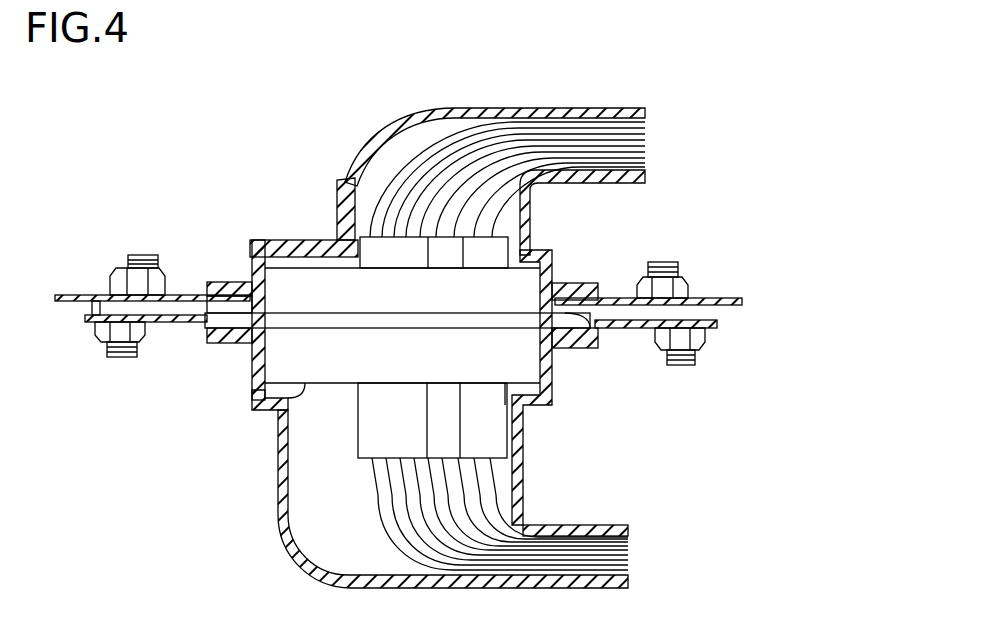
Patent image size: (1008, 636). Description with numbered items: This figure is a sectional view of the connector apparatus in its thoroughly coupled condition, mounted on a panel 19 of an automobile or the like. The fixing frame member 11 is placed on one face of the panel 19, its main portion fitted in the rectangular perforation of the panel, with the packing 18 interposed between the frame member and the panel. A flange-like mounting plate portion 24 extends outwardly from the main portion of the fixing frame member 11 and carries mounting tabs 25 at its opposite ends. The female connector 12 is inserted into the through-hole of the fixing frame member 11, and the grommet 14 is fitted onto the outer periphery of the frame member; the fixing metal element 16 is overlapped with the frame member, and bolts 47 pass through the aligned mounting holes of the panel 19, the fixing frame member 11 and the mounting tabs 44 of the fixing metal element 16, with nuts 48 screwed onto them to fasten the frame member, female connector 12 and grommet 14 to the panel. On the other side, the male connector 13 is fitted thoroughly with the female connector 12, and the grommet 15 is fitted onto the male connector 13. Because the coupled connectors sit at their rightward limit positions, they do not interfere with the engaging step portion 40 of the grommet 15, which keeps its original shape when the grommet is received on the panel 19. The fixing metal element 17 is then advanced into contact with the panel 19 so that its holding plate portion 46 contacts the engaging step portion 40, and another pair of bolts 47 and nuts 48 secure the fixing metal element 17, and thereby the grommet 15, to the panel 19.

The fixing frame member 11 is at (256, 396).
The female connector 12 is at (490, 418).
The male connector 13 is at (500, 242).
The grommet 14 is at (280, 500).
The grommet 15 is at (382, 140).
The grommet fixing metal element 16 is at (568, 347).
The grommet fixing metal element 17 is at (260, 244).
The packing 18 is at (596, 328).
The panel 19 is at (80, 294).
The mounting plate portion 24 is at (230, 334).
The mounting tabs 25 is at (94, 311).
The engaging step portion 40 is at (292, 240).
The mounting tabs 44 is at (156, 324).
The holding plate portion 46 is at (345, 208).
The bolts 47 is at (132, 256).
The nuts 48 is at (120, 286).